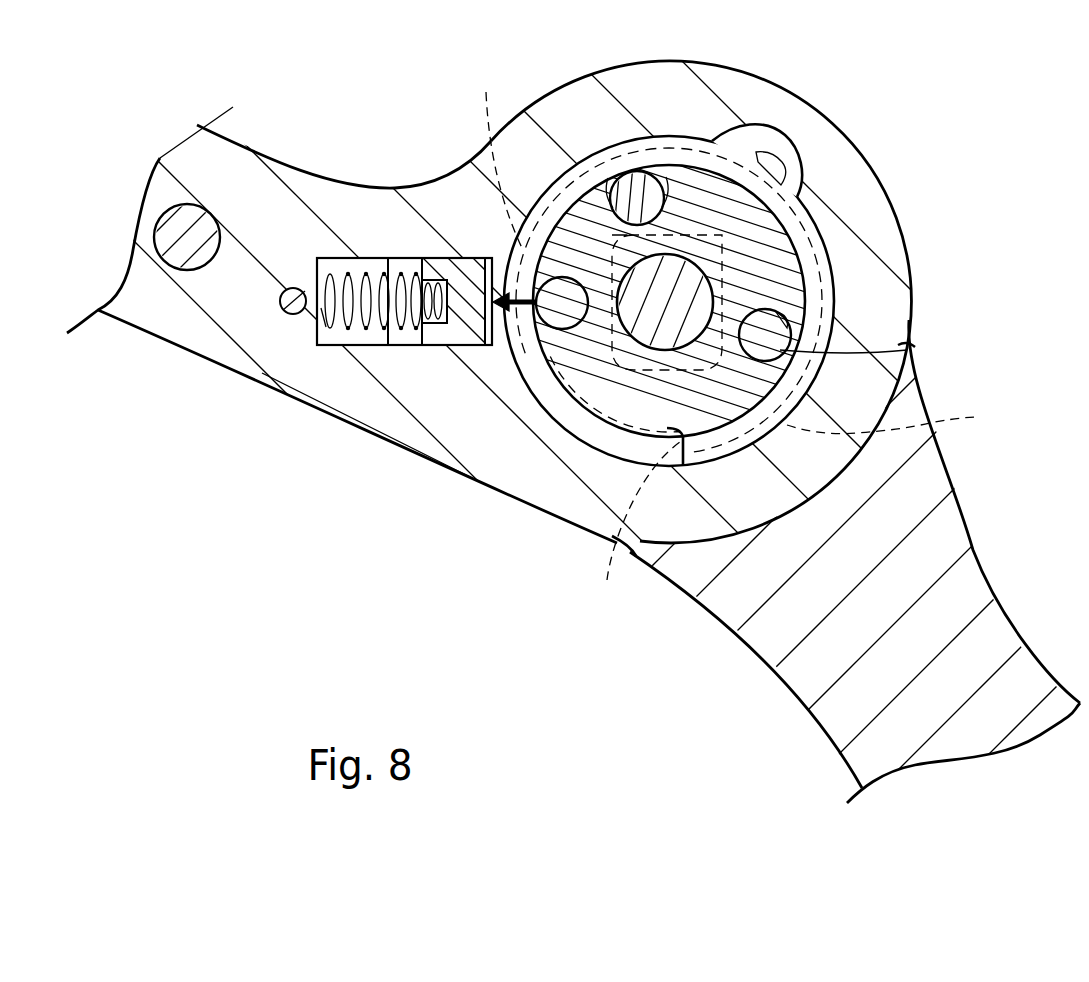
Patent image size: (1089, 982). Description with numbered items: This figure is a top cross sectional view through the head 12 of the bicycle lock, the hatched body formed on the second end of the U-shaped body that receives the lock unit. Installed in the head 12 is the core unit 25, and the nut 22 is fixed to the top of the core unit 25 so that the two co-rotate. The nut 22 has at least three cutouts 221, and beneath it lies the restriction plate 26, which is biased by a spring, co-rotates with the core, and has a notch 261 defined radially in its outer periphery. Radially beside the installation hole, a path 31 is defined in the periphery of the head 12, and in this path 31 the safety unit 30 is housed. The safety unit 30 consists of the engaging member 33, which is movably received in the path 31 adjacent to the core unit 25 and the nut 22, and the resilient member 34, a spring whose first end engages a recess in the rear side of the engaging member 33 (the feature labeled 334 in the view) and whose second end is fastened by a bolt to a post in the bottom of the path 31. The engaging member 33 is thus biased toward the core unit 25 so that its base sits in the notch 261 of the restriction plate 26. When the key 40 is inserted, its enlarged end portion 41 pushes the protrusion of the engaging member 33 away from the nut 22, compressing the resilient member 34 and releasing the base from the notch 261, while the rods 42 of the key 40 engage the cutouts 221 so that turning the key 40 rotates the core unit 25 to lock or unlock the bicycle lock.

The head 12 is at (720, 112).
The nut 22 is at (639, 152).
The core unit 25 is at (700, 277).
The restriction plate 26 is at (896, 418).
The notch 261 is at (570, 338).
The safety unit 30 is at (377, 246).
The path 31 is at (339, 276).
The engaging member 33 is at (454, 362).
The resilient member 34 is at (324, 346).
The piston slot 334 is at (445, 298).
The key 40 is at (840, 244).
The end portion 41 is at (815, 226).
The rods 42 is at (907, 349).
The cutouts 221 is at (780, 327).